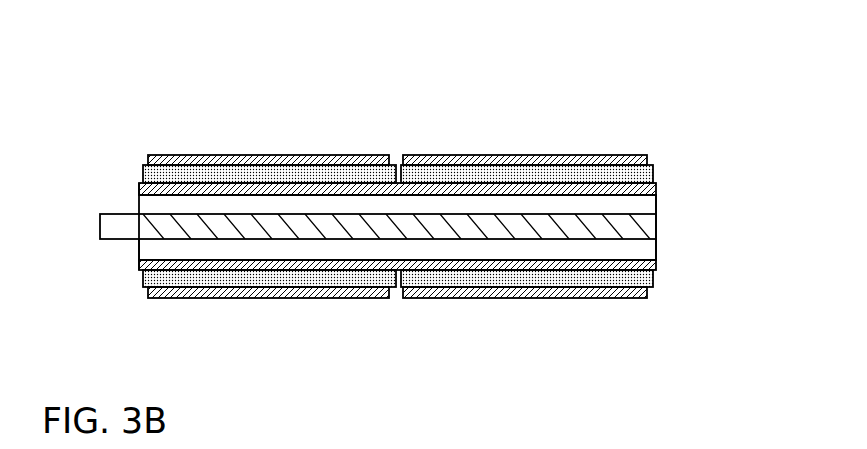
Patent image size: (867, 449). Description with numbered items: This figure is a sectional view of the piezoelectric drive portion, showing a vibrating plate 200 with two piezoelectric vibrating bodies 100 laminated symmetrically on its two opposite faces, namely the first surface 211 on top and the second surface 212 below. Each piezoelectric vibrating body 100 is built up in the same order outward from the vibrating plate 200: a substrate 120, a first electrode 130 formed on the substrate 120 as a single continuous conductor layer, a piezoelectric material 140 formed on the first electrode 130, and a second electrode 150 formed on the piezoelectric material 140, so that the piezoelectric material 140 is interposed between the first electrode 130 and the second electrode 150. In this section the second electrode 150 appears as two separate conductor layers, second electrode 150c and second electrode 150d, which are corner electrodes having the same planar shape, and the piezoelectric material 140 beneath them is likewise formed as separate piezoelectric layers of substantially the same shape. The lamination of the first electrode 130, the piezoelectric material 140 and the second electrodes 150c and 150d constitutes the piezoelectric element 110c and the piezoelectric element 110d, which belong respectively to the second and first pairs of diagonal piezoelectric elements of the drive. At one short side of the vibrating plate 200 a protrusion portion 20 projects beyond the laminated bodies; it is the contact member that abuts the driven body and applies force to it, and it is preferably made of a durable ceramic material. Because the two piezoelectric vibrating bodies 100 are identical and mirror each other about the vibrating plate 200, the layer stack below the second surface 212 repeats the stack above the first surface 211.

The protrusion portion 20 is at (98, 226).
The piezoelectric vibrating body 100 is at (402, 216).
The piezoelectric element 110c is at (397, 88).
The piezoelectric element 110d is at (648, 88).
The substrate 120 is at (658, 204).
The first electrode 130 is at (139, 189).
The piezoelectric material 140 is at (143, 174).
The second electrode 150 is at (430, 218).
The second electrode 150c is at (338, 155).
The second electrode 150d is at (566, 155).
The vibrating plate 200 is at (657, 222).
The first surface 211 is at (430, 213).
The second surface 212 is at (430, 240).